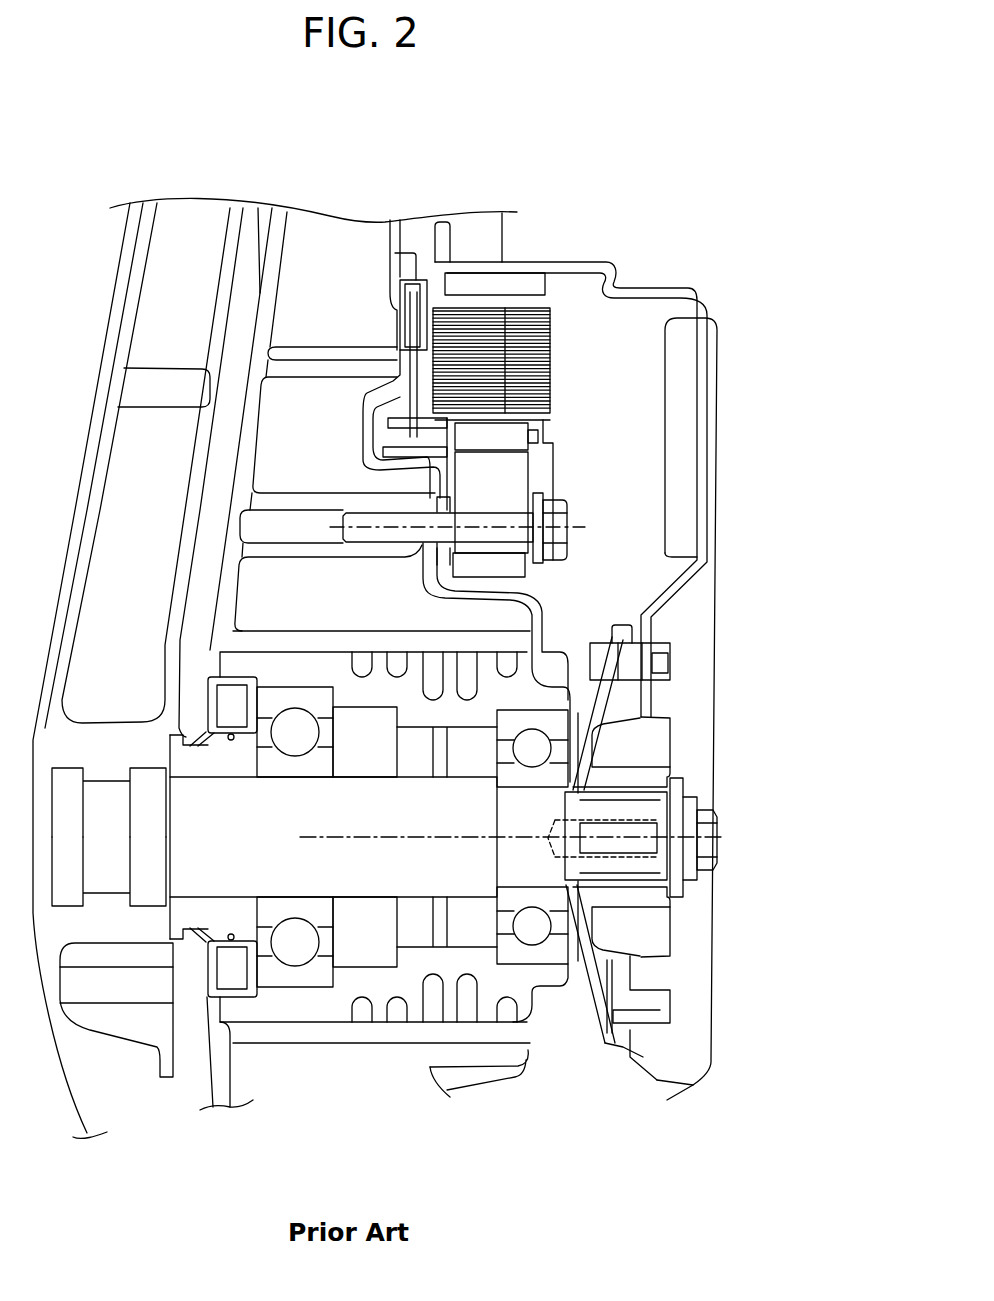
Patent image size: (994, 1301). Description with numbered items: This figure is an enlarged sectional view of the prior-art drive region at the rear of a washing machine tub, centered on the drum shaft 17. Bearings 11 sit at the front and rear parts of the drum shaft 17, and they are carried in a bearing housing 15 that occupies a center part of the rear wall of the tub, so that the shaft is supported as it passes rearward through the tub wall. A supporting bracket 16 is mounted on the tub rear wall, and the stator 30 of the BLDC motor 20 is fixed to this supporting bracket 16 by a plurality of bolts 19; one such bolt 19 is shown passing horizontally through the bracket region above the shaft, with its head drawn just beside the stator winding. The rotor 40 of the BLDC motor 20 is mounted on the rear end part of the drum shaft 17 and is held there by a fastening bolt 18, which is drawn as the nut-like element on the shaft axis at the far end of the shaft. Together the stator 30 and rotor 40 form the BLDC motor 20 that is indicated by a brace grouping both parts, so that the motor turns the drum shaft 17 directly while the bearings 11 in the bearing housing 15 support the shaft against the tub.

The bearing 11 is at (297, 735).
The bearing housing 15 is at (540, 688).
The supporting bracket 16 is at (389, 289).
The drum shaft 17 is at (415, 808).
The fastening bolt 18 is at (718, 831).
The bolt 19 is at (568, 508).
The BLDC motor 20 is at (649, 489).
The stator 30 is at (552, 333).
The rotor 40 is at (700, 410).